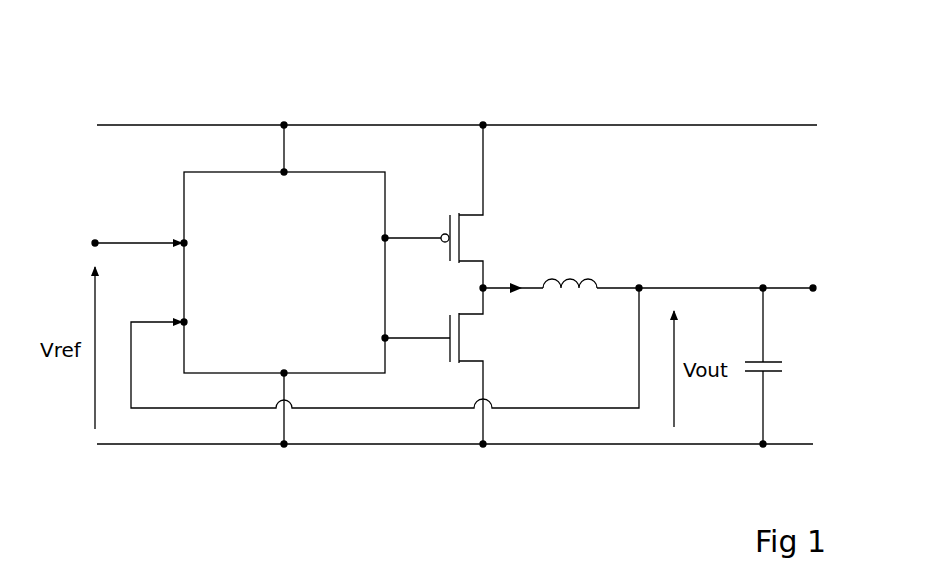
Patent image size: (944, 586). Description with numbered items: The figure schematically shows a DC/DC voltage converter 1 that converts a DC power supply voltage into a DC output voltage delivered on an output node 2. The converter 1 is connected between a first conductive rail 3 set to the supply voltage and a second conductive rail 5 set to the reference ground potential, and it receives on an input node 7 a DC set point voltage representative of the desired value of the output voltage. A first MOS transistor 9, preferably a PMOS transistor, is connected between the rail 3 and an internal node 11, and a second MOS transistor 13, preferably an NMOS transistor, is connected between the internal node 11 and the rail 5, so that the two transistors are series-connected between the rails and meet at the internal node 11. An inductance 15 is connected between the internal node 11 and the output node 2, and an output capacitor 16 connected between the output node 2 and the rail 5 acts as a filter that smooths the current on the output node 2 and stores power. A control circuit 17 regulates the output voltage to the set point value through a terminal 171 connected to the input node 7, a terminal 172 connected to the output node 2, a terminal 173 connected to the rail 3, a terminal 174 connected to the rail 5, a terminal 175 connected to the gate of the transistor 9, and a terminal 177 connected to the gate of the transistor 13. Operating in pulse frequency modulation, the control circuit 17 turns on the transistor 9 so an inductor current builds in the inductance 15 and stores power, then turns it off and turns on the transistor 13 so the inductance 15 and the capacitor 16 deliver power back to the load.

The voltage converter 1 is at (718, 58).
The output node 2 is at (815, 288).
The first conductive rail 3 is at (733, 125).
The second conductive rail 5 is at (683, 445).
The input node 7 is at (95, 243).
The first MOS transistor 9 is at (470, 232).
The internal node 11 is at (485, 289).
The second MOS transistor 13 is at (470, 343).
The inductance 15 is at (575, 283).
The output capacitor 16 is at (768, 362).
The control circuit 17 is at (284, 272).
The terminal 171 is at (186, 243).
The terminal 172 is at (186, 322).
The terminal 173 is at (284, 174).
The terminal 174 is at (284, 372).
The terminal 175 is at (385, 238).
The terminal 177 is at (383, 339).